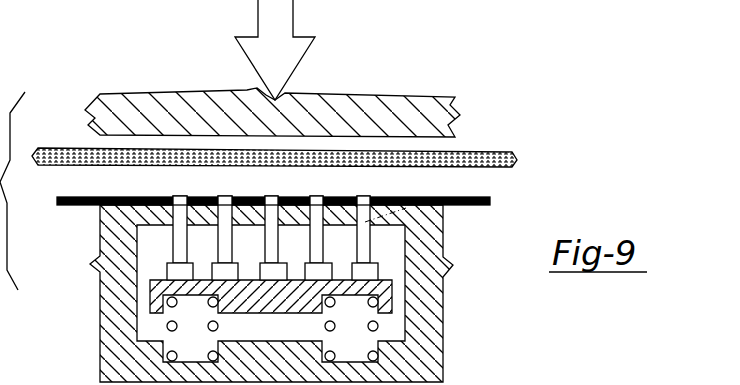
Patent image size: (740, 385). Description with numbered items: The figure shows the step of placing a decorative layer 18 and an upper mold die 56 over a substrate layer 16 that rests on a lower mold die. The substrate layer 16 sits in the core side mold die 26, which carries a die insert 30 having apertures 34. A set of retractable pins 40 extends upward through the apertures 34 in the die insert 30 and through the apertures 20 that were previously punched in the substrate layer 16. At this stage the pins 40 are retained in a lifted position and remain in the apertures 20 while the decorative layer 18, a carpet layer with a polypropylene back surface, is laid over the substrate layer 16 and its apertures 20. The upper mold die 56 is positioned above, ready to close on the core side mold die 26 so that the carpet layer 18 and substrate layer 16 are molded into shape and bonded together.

The substrate layer 16 is at (490, 203).
The decorative layer 18 is at (510, 155).
The apertures 20 is at (278, 197).
The core side mold die 26 is at (318, 293).
The die insert 30 is at (424, 323).
The apertures 34 is at (364, 226).
The retractable pins 40 is at (180, 243).
The upper mold die 56 is at (458, 116).